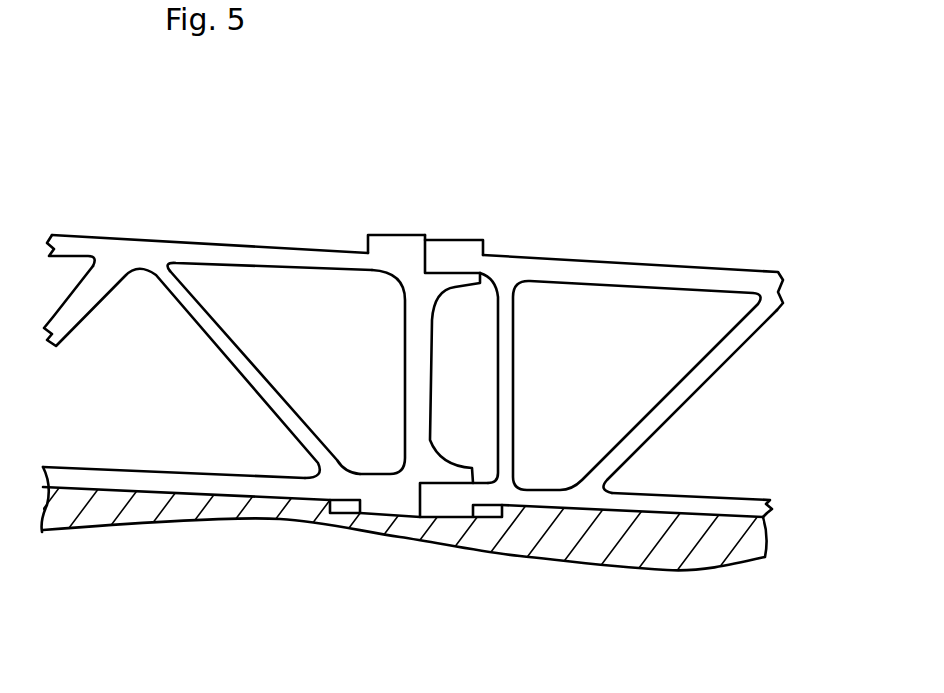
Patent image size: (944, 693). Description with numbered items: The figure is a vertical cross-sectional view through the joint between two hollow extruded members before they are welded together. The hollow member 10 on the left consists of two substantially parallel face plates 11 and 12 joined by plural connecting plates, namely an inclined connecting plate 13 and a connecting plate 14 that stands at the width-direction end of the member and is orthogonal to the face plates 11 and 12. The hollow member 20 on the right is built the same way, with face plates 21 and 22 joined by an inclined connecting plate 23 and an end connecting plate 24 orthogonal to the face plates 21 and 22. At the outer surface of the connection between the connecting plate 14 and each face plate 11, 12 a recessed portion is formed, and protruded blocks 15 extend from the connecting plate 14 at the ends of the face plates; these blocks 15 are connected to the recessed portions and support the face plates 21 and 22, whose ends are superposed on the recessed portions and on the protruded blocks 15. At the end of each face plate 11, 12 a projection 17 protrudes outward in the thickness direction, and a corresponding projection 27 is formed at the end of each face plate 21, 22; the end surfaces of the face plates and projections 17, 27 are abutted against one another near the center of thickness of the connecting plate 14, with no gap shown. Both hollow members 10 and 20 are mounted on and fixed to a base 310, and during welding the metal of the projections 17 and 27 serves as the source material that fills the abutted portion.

The hollow member 10 is at (207, 198).
The face plate 11 is at (258, 249).
The face plate 12 is at (129, 478).
The connecting plate 13 is at (60, 324).
The connecting plate 14 is at (413, 353).
The protruded block 15 is at (455, 285).
The projection 17 is at (394, 236).
The hollow member 20 is at (589, 218).
The face plate 21 is at (620, 265).
The face plate 22 is at (693, 503).
The connecting plate 23 is at (690, 383).
The connecting plate 24 is at (637, 385).
The projection 27 is at (462, 240).
The base 310 is at (571, 553).